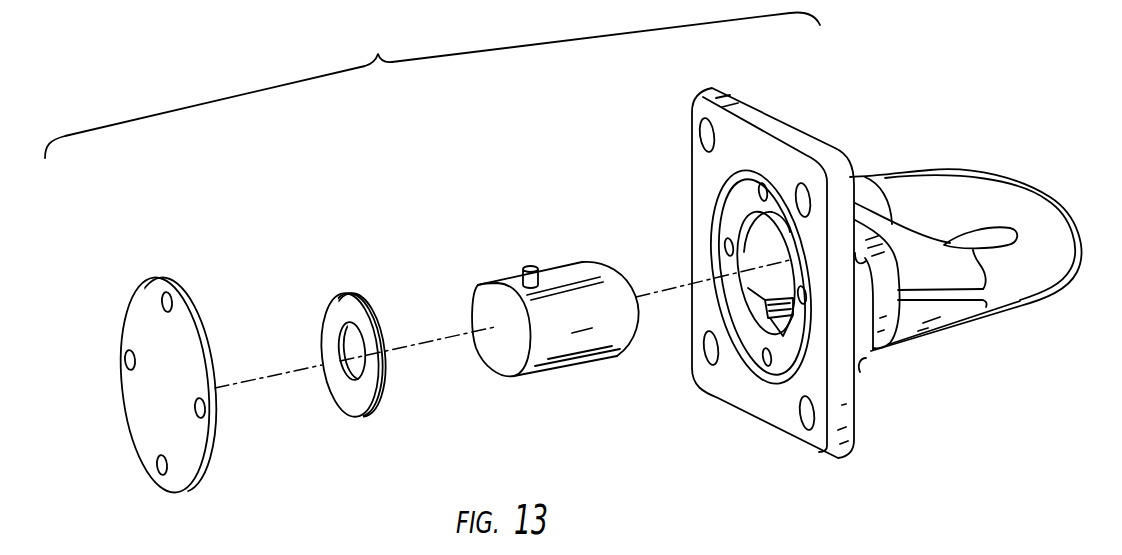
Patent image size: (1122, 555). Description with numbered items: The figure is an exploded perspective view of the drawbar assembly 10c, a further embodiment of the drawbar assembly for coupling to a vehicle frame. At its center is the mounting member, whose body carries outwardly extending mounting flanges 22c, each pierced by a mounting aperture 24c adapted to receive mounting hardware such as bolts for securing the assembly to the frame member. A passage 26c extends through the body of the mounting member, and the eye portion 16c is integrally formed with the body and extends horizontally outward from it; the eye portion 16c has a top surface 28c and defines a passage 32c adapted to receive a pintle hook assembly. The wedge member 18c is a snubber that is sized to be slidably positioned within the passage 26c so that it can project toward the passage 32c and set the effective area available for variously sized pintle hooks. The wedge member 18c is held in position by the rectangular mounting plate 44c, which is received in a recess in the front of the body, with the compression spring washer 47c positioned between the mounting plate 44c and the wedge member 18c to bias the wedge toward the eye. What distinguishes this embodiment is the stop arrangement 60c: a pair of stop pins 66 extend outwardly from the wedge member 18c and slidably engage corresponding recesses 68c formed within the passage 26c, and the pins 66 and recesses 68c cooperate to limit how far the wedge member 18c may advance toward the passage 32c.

The drawbar assembly 10c is at (432, 85).
The eye portion 16c is at (965, 258).
The wedge member 18c is at (609, 334).
The mounting flange 22c is at (708, 131).
The mounting aperture 24c is at (793, 272).
The passage 26c is at (794, 307).
The top surface 28c is at (1010, 192).
The passage 32c is at (956, 338).
The mounting plate 44c is at (170, 278).
The compression spring washer 47c is at (350, 294).
The stop arrangement 60c is at (746, 319).
The stop pin 66 is at (538, 272).
The recess 68c is at (772, 316).